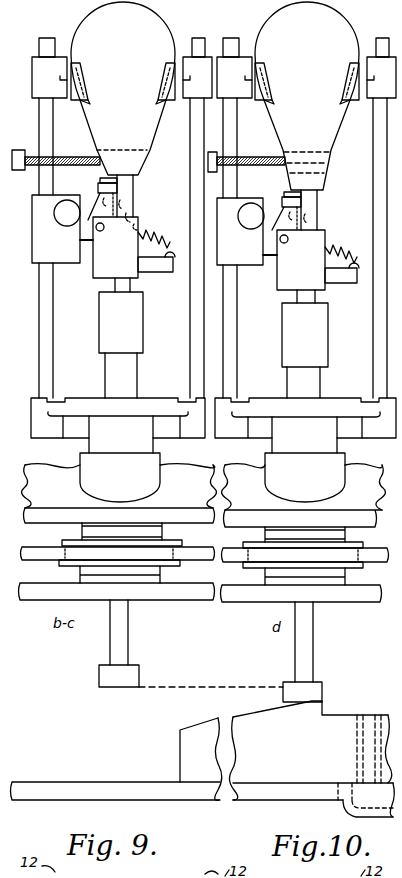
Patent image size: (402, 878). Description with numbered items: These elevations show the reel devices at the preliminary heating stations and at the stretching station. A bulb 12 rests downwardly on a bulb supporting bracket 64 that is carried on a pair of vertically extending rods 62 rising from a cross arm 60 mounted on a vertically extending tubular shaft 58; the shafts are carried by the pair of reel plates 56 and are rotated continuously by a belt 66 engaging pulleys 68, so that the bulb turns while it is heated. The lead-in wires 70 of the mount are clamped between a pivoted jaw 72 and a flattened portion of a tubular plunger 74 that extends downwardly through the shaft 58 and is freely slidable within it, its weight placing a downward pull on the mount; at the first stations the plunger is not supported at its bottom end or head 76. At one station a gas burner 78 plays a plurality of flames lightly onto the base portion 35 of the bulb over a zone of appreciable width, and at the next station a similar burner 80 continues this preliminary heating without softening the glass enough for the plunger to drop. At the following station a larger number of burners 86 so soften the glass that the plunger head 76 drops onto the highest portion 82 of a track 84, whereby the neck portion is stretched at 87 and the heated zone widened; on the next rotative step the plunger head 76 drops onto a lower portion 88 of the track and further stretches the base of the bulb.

In FIG. 9, the bulb 12 is at (123, 88).
In FIG. 10, the bulb 12 is at (307, 96).
In FIG. 9, the base portion 35 is at (121, 160).
In FIG. 9, the plates 56 is at (117, 554).
In FIG. 10, the plates 56 is at (302, 556).
In FIG. 9, the tubular shaft 58 is at (134, 382).
In FIG. 10, the tubular shaft 58 is at (316, 387).
In FIG. 9, the cross arm 60 is at (82, 404).
In FIG. 10, the cross arm 60 is at (275, 404).
In FIG. 9, the rods 62 is at (45, 38).
In FIG. 10, the rods 62 is at (233, 38).
In FIG. 9, the bulb supporting bracket 64 is at (198, 38).
In FIG. 10, the bulb supporting bracket 64 is at (381, 38).
In FIG. 9, the belt 66 is at (45, 548).
In FIG. 10, the belt 66 is at (376, 540).
In FIG. 9, the pulleys 68 is at (180, 545).
In FIG. 10, the pulleys 68 is at (247, 540).
In FIG. 9, the lead-in wires 70 is at (112, 179).
In FIG. 10, the lead-in wires 70 is at (297, 193).
In FIG. 9, the pivoted jaw 72 is at (98, 188).
In FIG. 10, the pivoted jaw 72 is at (282, 200).
In FIG. 9, the tubular plunger 74 is at (134, 193).
In FIG. 10, the tubular plunger 74 is at (318, 212).
In FIG. 9, the plunger head 76 is at (114, 679).
In FIG. 10, the plunger head 76 is at (287, 682).
In FIG. 9, the gas burner 78 is at (21, 150).
In FIG. 9, the burner 80 is at (15, 171).
In FIG. 10, the highest portion of track 82 is at (325, 703).
In FIG. 9, the track 84 is at (184, 741).
In FIG. 10, the burners 86 is at (212, 152).
In FIG. 10, the stretched neck portion 87 is at (326, 163).
In FIG. 10, the lower portion of track 88 is at (356, 714).